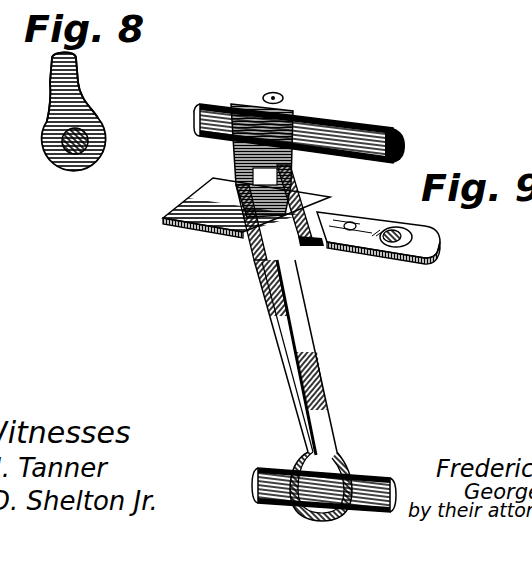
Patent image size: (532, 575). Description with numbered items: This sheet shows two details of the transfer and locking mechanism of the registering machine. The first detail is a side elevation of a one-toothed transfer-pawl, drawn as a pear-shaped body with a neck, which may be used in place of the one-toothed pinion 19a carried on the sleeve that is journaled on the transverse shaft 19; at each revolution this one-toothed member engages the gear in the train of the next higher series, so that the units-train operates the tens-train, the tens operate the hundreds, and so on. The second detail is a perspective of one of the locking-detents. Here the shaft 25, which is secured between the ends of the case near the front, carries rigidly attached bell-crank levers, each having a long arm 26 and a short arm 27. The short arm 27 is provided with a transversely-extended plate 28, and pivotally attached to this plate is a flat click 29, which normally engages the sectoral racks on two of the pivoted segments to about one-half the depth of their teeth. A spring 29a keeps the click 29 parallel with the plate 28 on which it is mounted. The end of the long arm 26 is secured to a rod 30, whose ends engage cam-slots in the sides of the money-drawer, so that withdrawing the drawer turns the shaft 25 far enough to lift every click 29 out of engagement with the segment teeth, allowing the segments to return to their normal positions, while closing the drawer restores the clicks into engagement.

In FIG. 8, the transverse shaft 19 is at (104, 141).
In FIG. 8, the one-toothed pinion 19a is at (84, 92).
In FIG. 9, the shaft 25 is at (363, 124).
In FIG. 9, the long arm 26 is at (302, 312).
In FIG. 9, the short arm 27 is at (390, 132).
In FIG. 9, the transversely-extended plate 28 is at (389, 226).
In FIG. 9, the flat click 29 is at (192, 199).
In FIG. 9, the spring 29a is at (333, 202).
In FIG. 9, the rod 30 is at (361, 476).